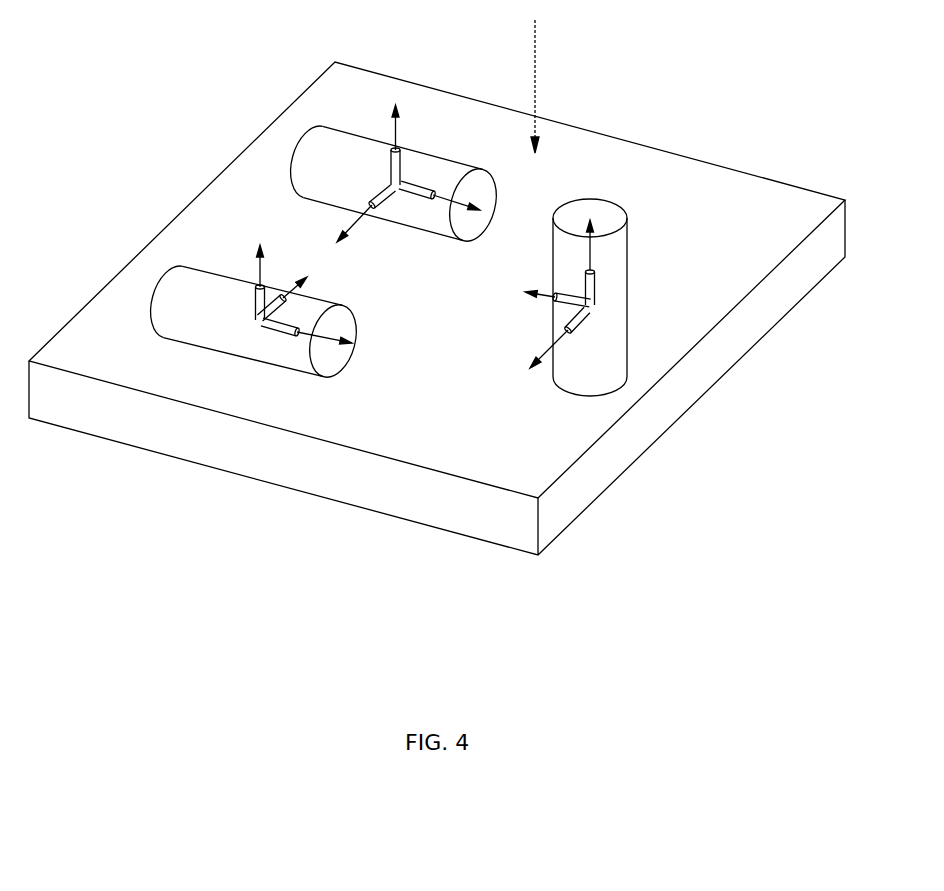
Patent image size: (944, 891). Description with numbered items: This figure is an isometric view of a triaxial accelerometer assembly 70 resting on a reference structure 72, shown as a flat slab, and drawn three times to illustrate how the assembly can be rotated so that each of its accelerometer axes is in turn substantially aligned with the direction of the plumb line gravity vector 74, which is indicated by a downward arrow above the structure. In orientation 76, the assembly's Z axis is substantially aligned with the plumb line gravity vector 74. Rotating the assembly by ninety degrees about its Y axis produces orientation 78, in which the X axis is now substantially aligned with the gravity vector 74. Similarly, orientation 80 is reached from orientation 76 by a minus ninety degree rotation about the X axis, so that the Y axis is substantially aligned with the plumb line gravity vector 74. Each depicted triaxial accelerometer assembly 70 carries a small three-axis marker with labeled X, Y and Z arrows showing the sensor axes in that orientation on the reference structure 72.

The triaxial accelerometer assembly 70 is at (316, 168).
The reference structure 72 is at (705, 169).
The plumb line gravity vector 74 is at (533, 72).
The orientation 76 is at (397, 192).
The orientation 78 is at (255, 323).
The orientation 80 is at (597, 300).